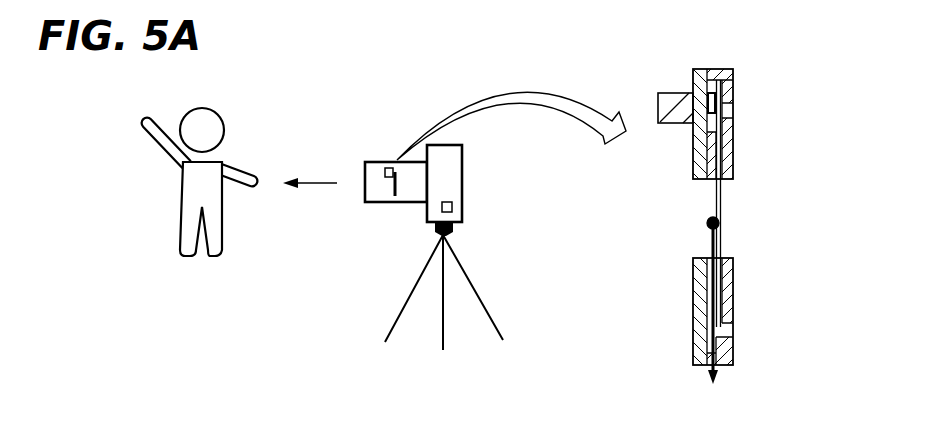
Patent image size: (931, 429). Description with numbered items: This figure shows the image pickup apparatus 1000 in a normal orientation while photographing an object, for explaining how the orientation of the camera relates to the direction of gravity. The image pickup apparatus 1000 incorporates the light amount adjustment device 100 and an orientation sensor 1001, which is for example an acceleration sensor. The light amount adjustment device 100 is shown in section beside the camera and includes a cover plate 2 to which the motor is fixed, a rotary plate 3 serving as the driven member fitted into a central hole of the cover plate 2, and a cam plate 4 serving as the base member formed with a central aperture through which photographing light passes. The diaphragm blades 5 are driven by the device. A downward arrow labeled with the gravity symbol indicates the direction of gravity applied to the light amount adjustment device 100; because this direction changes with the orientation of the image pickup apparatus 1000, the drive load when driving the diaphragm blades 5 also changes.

The image pickup apparatus 1000 is at (458, 167).
The orientation sensor 1001 is at (453, 205).
The light amount adjustment device 100 is at (754, 243).
The cover plate 2 is at (698, 77).
The rotary plate 3 is at (703, 332).
The cam plate 4 is at (728, 78).
The diaphragm blades 5 is at (720, 205).